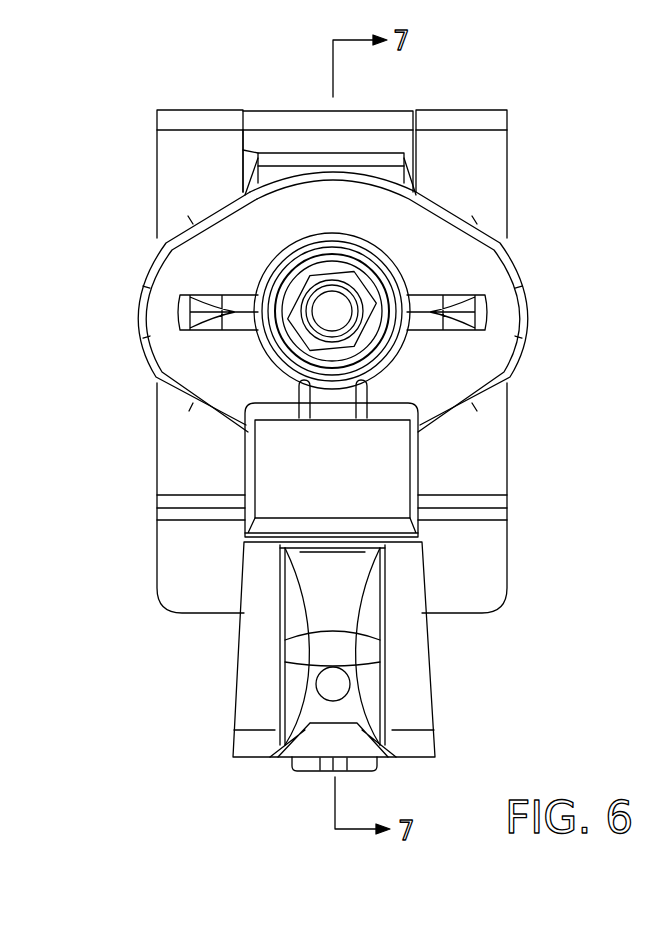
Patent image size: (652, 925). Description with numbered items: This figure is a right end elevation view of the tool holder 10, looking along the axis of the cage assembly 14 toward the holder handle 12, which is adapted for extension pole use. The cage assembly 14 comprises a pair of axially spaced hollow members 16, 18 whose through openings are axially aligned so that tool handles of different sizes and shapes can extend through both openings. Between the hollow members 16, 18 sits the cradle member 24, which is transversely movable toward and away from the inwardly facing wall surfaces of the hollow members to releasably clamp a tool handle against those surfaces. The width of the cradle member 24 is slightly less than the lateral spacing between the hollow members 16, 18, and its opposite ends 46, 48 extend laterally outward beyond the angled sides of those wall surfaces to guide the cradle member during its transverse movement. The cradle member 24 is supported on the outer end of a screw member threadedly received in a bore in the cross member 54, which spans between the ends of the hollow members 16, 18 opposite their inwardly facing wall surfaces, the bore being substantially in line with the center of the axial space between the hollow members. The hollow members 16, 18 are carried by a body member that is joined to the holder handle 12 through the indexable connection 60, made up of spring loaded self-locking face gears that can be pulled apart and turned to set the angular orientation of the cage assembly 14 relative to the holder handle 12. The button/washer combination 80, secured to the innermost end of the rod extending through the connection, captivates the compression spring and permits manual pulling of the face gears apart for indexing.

The tool holder 10 is at (335, 400).
The holder handle 12 is at (408, 648).
The cage assembly 14 is at (291, 321).
The hollow member 16 is at (463, 120).
The hollow member 18 is at (172, 158).
The cradle member 24 is at (263, 137).
The end of cradle member 46 is at (290, 118).
The end of cradle member 48 is at (378, 167).
The cross member 54 is at (482, 557).
The indexable connection 60 is at (235, 237).
The button/washer combination 80 is at (352, 322).